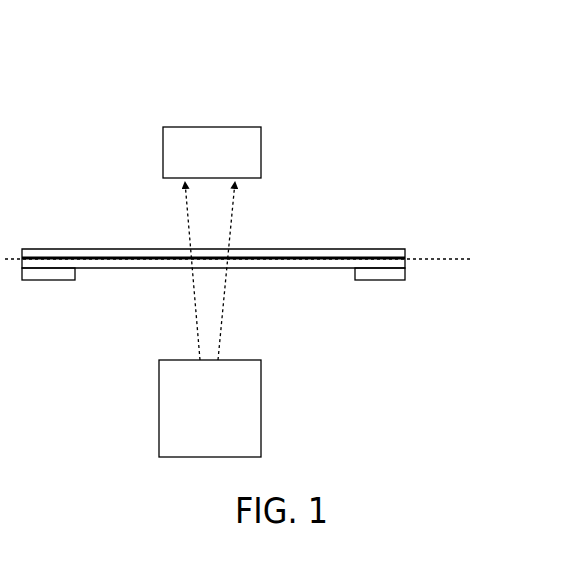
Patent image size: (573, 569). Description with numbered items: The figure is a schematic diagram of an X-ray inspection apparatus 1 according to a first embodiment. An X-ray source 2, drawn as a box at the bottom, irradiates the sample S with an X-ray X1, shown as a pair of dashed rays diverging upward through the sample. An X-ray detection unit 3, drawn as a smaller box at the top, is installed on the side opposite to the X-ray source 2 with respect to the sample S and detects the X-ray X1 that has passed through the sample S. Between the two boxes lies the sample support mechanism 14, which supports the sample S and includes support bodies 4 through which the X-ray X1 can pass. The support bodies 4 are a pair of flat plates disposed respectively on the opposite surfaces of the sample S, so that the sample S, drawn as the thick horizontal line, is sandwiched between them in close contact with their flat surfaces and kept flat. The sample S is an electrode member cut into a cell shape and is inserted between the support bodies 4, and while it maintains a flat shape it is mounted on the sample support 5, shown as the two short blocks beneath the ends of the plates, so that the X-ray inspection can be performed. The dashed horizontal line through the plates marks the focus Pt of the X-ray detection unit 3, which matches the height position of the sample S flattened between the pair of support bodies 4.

The X-ray inspection apparatus 1 is at (418, 88).
The X-ray source 2 is at (261, 400).
The X-ray detection unit 3 is at (261, 145).
The support bodies 4 is at (357, 249).
The sample support 5 is at (42, 281).
The sample support mechanism 14 is at (347, 313).
The sample S is at (312, 249).
The focus Pt is at (445, 250).
The X-ray X1 is at (227, 298).